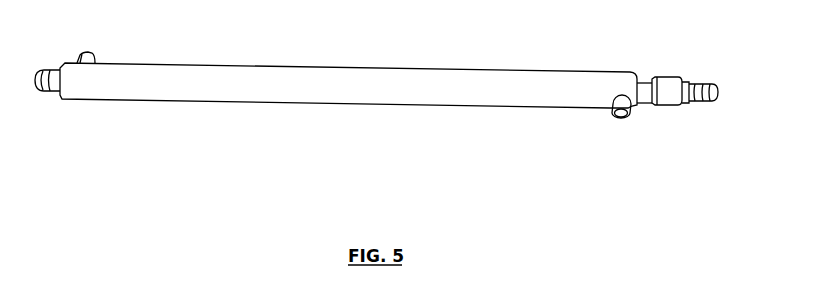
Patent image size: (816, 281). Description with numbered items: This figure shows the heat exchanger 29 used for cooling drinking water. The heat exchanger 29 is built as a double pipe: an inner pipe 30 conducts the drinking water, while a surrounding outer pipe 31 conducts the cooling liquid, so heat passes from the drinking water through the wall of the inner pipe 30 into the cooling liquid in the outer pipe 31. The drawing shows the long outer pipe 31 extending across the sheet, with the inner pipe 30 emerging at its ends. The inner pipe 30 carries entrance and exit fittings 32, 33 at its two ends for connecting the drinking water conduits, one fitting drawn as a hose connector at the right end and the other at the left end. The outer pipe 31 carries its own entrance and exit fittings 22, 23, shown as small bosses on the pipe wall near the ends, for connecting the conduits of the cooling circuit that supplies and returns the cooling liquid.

The entrance fitting 22 is at (78, 53).
The exit fitting 23 is at (623, 115).
The heat exchanger 29 is at (163, 146).
The inner pipe 30 is at (640, 82).
The outer pipe 31 is at (383, 93).
The entrance fitting 32 is at (699, 103).
The exit fitting 33 is at (44, 79).